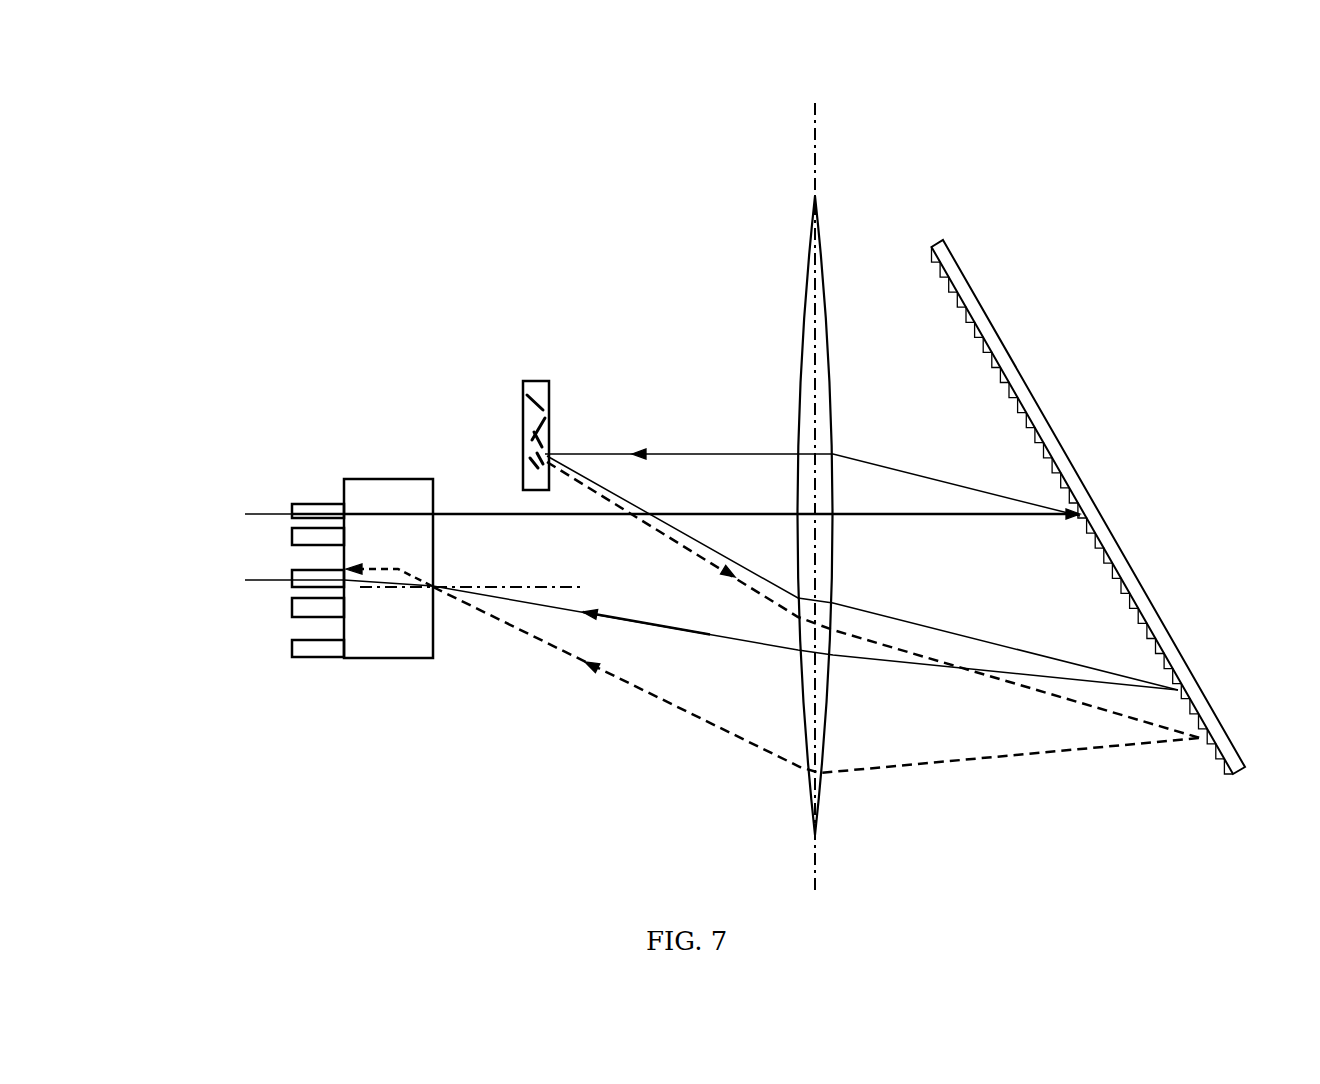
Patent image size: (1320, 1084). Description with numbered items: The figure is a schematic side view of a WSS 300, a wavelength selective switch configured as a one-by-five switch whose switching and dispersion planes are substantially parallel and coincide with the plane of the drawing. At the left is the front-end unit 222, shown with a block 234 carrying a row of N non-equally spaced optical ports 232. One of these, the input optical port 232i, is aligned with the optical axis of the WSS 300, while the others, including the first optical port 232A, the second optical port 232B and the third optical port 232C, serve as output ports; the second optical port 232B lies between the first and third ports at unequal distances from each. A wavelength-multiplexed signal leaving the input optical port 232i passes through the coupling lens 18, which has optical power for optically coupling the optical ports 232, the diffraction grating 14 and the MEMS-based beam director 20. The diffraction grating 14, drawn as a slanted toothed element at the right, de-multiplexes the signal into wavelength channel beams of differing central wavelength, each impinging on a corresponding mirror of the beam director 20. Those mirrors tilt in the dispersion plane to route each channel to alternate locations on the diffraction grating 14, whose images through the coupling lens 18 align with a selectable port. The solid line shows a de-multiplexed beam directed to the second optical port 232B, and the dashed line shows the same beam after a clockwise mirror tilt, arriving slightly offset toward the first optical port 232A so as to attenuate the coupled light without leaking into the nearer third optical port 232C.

The WSS 300 is at (612, 67).
The front-end unit 222 is at (312, 346).
The optical ports 232 is at (322, 478).
The input optical port 232i is at (292, 505).
The first optical port 232A is at (292, 533).
The second optical port 232B is at (292, 581).
The third optical port 232C is at (292, 617).
The source mounting block 234 is at (386, 478).
The MEMS-based beam director 20 is at (524, 381).
The coupling lens 18 is at (826, 222).
The diffraction grating 14 is at (1015, 367).